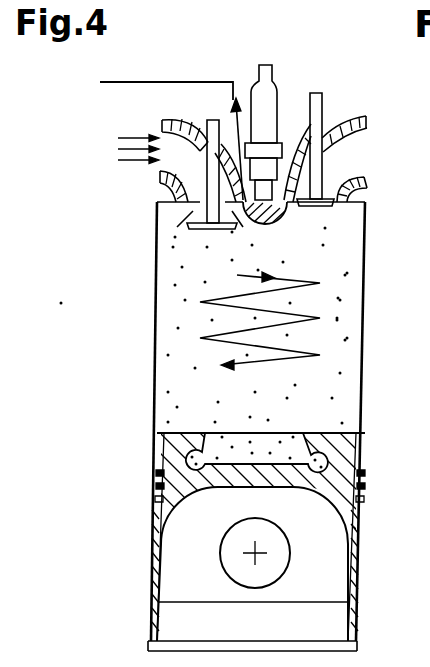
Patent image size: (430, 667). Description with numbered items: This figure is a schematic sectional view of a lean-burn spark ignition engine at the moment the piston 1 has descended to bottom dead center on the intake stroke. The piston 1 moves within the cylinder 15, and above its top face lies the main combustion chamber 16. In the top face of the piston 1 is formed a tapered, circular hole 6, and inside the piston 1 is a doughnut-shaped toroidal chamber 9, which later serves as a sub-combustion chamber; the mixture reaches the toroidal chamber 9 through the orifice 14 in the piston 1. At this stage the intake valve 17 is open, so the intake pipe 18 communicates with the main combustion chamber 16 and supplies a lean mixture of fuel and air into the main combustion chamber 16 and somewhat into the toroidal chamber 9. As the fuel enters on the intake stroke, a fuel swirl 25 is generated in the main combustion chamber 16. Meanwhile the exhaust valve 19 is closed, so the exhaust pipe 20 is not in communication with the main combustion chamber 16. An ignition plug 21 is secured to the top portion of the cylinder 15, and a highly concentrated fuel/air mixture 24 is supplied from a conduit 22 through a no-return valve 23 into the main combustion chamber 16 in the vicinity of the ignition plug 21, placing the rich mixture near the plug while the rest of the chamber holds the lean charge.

The piston 1 is at (357, 514).
The tapered circular hole 6 is at (280, 442).
The toroidal chamber 9 is at (330, 462).
The orifice 14 is at (298, 490).
The cylinder 15 is at (362, 358).
The main combustion chamber 16 is at (338, 280).
The intake valve 17 is at (215, 233).
The intake pipe 18 is at (160, 188).
The exhaust valve 19 is at (360, 207).
The exhaust pipe 20 is at (366, 183).
The ignition plug 21 is at (282, 140).
The conduit 22 is at (233, 82).
The no-return valve 23 is at (237, 100).
The highly concentrated fuel/air mixture 24 is at (268, 222).
The fuel swirl 25 is at (200, 340).